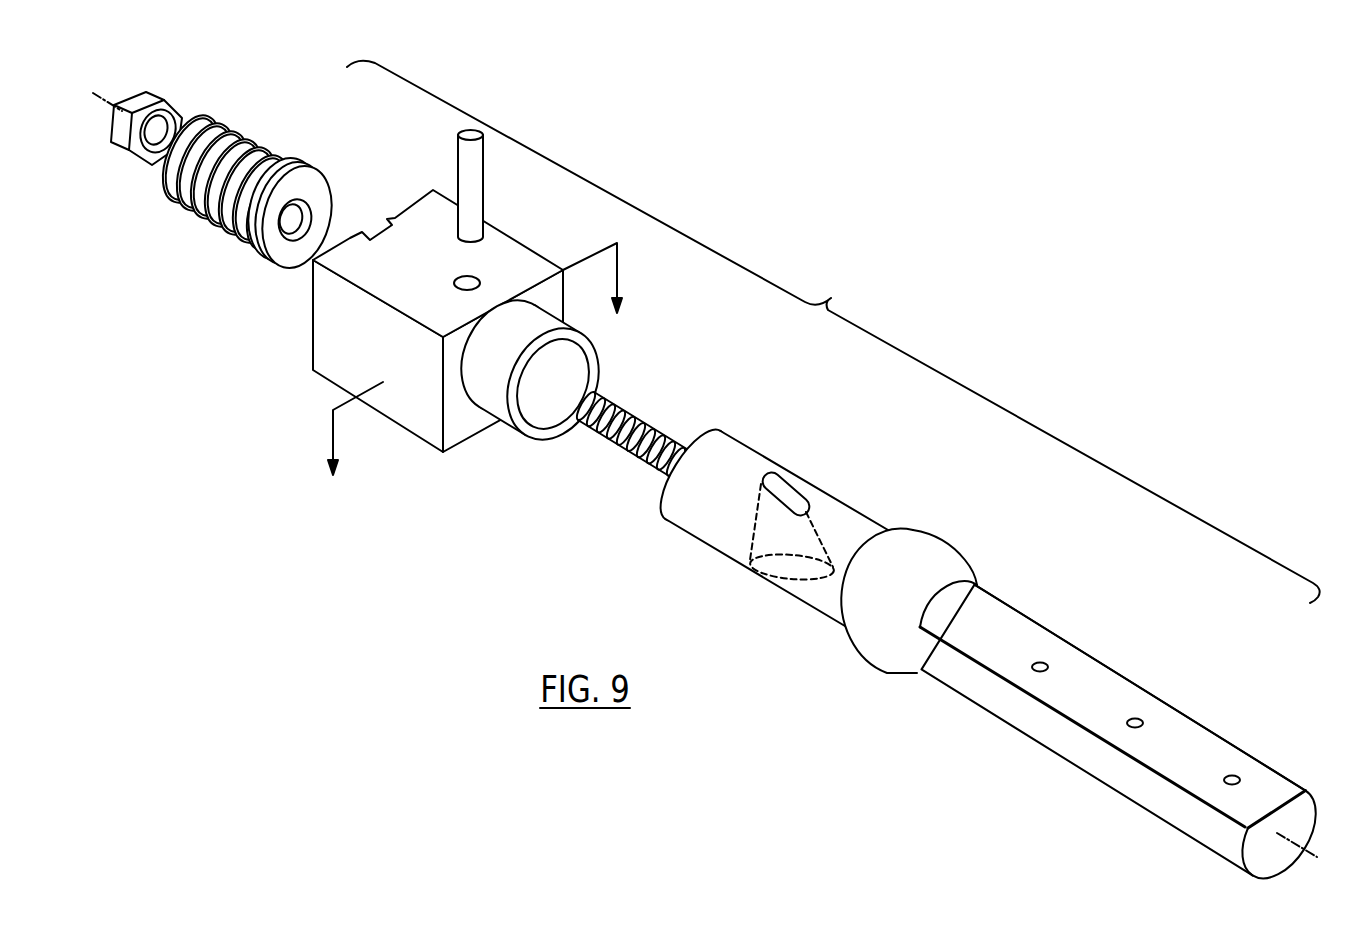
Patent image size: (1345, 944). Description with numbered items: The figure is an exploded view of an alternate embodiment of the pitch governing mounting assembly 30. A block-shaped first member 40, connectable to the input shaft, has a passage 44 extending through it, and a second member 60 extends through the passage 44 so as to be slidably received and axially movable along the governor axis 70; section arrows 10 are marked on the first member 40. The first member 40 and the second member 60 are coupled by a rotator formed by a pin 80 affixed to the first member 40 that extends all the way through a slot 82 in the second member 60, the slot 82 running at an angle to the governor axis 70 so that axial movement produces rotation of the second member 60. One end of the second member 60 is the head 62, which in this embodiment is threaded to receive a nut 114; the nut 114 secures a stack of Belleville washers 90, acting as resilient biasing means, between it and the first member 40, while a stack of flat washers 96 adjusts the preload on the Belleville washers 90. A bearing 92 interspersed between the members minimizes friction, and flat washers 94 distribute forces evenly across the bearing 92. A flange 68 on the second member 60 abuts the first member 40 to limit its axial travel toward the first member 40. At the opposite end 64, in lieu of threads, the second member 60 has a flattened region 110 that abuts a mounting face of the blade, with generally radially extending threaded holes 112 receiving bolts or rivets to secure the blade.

The section line indicator 10 is at (474, 380).
The pitch governing mounting assembly 30 is at (833, 332).
The first member 40 is at (538, 267).
The passage 44 is at (560, 378).
The second member 60 is at (811, 526).
The head 62 is at (619, 435).
The end 64 is at (1129, 729).
The flange 68 is at (938, 565).
The governor axis 70 is at (1305, 848).
The pin 80 is at (476, 183).
The slot 82 is at (788, 494).
The Belleville washers 90 is at (256, 190).
The bearing 92 is at (245, 241).
The flat washers 94 is at (294, 160).
The stack of flat washers 96 is at (246, 113).
The flattened region 110 is at (1098, 690).
The threaded holes 112 is at (1041, 658).
The nut 114 is at (162, 97).